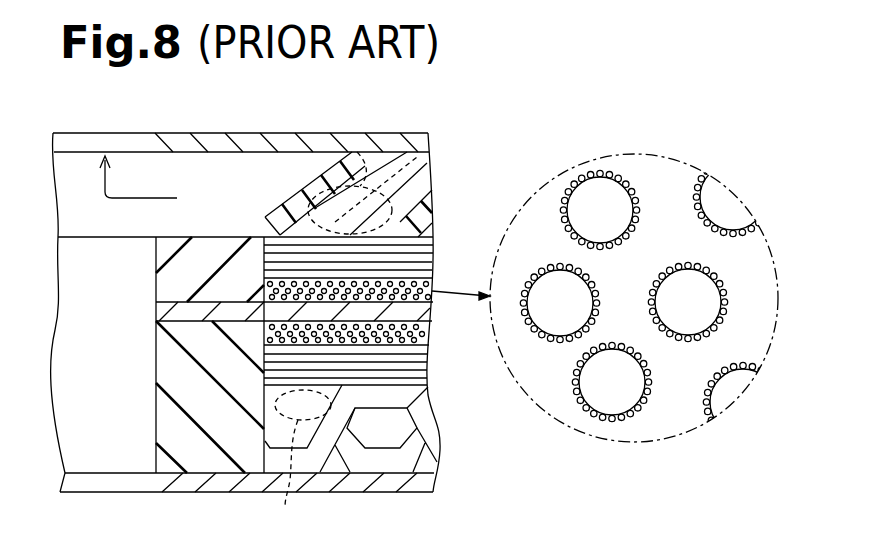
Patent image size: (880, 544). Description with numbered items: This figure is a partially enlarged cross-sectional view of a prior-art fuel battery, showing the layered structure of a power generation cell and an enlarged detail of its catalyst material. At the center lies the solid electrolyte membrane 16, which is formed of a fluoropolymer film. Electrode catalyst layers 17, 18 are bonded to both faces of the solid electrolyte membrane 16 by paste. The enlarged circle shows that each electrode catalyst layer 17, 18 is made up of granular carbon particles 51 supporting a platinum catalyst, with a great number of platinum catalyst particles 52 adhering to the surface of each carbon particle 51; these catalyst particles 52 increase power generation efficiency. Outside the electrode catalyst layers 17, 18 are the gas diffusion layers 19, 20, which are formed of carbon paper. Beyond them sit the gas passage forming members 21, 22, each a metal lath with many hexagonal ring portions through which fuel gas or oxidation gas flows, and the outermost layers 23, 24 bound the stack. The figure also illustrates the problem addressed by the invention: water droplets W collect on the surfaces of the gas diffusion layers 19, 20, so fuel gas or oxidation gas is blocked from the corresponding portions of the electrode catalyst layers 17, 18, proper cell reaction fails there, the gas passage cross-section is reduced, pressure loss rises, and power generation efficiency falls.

The solid electrolyte membrane 16 is at (432, 309).
The electrode catalyst layer 17 is at (432, 283).
The electrode catalyst layer 18 is at (432, 329).
The gas diffusion layer 19 is at (432, 251).
The gas diffusion layer 20 is at (430, 365).
The gas passage forming member 21 is at (284, 198).
The gas passage forming member 22 is at (437, 430).
The outer layer 23 is at (284, 137).
The outer layer 24 is at (350, 483).
The carbon particle 51 is at (633, 211).
The catalyst particle 52 is at (618, 172).
The droplets W is at (356, 150).